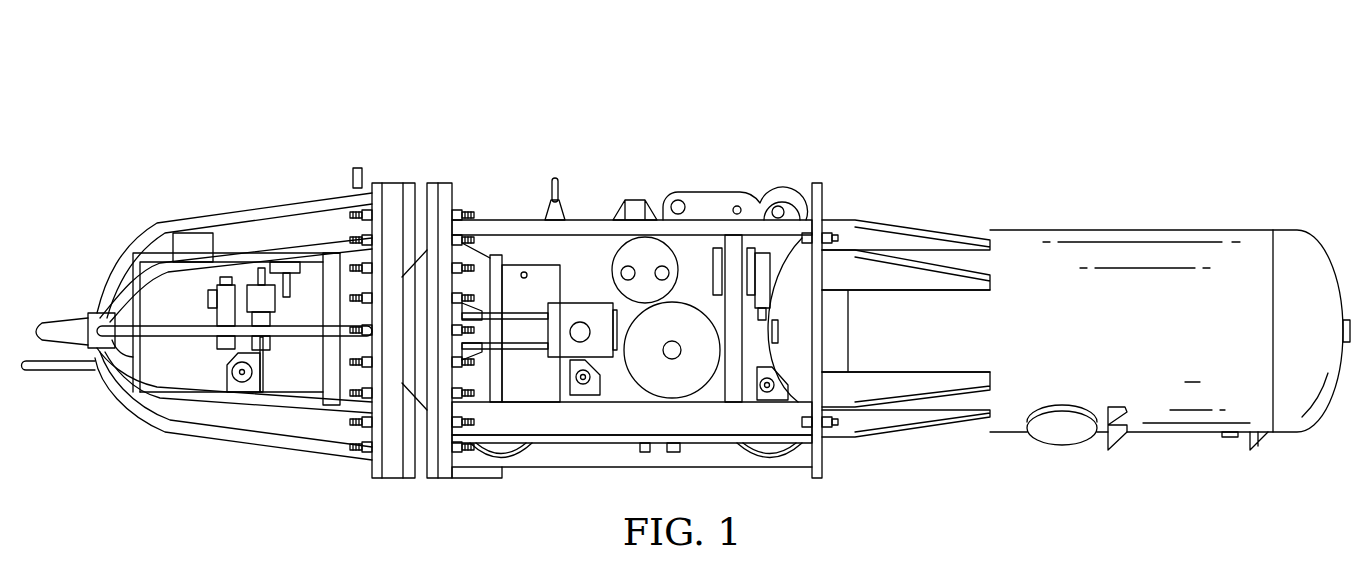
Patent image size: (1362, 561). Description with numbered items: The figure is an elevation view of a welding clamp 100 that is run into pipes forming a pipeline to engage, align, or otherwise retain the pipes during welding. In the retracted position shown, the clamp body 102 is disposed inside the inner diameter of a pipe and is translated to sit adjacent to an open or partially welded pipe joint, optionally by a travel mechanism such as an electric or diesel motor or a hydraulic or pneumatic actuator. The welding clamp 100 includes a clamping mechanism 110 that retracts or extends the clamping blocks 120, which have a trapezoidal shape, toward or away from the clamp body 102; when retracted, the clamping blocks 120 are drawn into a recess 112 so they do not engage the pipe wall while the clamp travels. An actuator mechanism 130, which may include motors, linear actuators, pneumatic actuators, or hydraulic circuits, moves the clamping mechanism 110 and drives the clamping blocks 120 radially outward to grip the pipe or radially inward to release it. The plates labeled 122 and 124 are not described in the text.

The welding clamp 100 is at (967, 83).
The clamp body 102 is at (1135, 230).
The clamping mechanism 110 is at (455, 199).
The recess 112 is at (422, 470).
The clamping blocks 120 is at (390, 468).
The first flange plate 122 is at (408, 193).
The second flange plate 124 is at (437, 190).
The actuator mechanism 130 is at (543, 275).